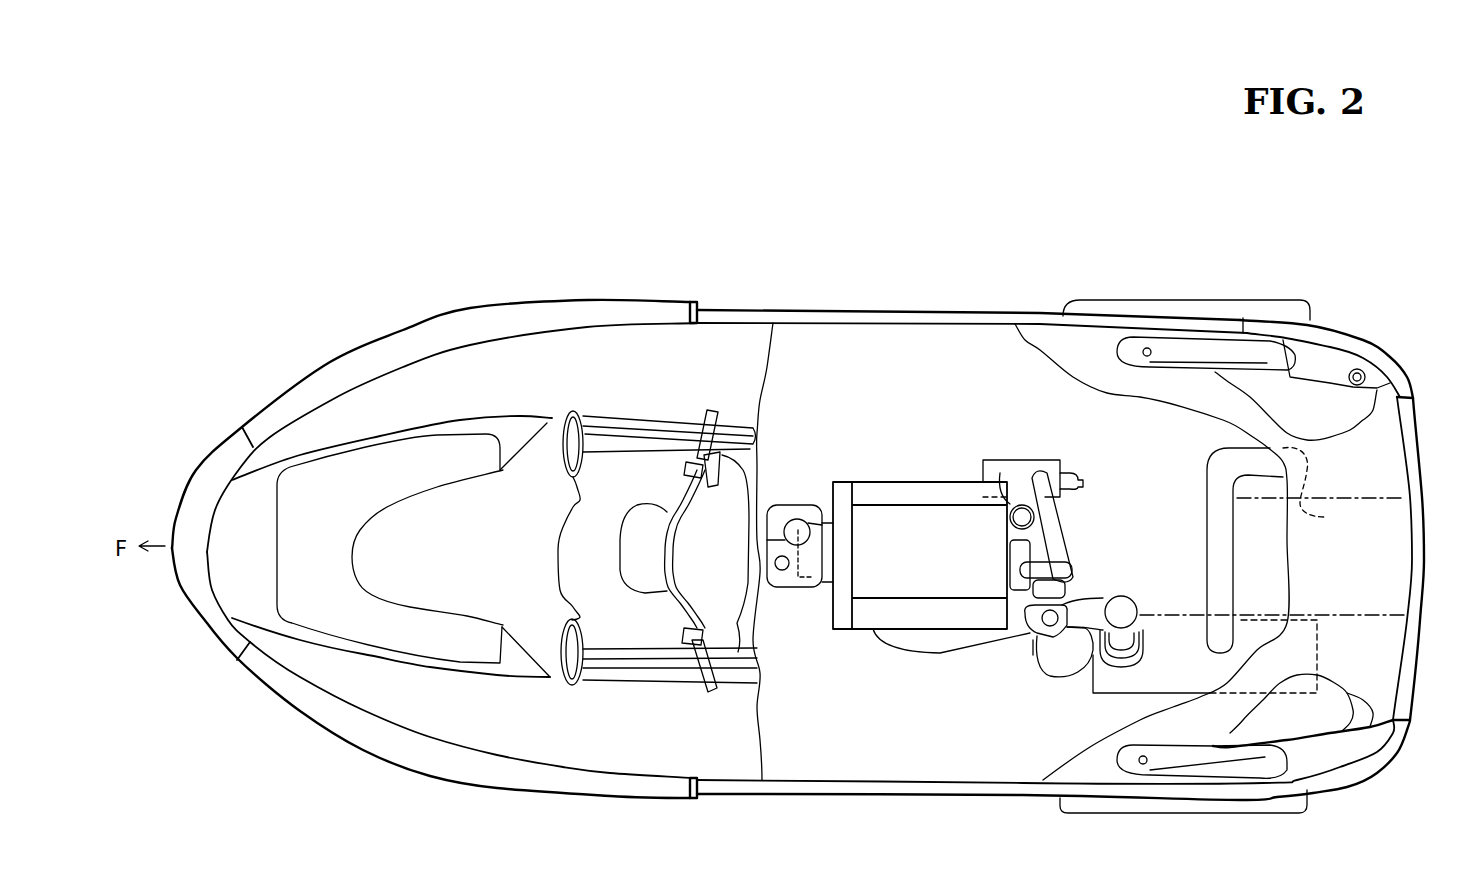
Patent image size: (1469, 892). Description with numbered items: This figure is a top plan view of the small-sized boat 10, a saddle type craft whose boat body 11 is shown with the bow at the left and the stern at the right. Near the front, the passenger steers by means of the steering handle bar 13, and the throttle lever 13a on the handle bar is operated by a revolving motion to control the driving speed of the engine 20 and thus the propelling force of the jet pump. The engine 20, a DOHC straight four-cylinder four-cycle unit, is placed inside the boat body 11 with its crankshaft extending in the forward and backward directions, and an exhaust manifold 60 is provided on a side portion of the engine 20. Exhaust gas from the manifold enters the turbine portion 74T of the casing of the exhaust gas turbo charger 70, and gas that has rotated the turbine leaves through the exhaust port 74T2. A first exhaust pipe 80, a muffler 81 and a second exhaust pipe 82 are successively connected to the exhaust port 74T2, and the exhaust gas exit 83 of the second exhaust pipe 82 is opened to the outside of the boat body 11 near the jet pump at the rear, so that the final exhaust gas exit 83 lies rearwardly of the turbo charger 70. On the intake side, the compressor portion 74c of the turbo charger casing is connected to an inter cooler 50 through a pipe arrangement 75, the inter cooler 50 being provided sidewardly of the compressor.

The small-sized boat 10 is at (1152, 256).
The boat body 11 is at (1030, 311).
The steering handle bar 13 is at (717, 410).
The throttle lever 13a is at (753, 448).
The engine 20 is at (908, 645).
The inter cooler 50 is at (1020, 463).
The exhaust manifold 60 is at (967, 661).
The exhaust gas turbo charger 70 is at (1082, 590).
The compressor portion 74c is at (1065, 570).
The turbine portion 74T is at (1035, 637).
The exhaust port 74T2 is at (1043, 670).
The pipe arrangement 75 is at (1060, 540).
The first exhaust pipe 80 is at (1077, 678).
The muffler 81 is at (1130, 687).
The second exhaust pipe 82 is at (1212, 482).
The exhaust gas exit 83 is at (1310, 512).